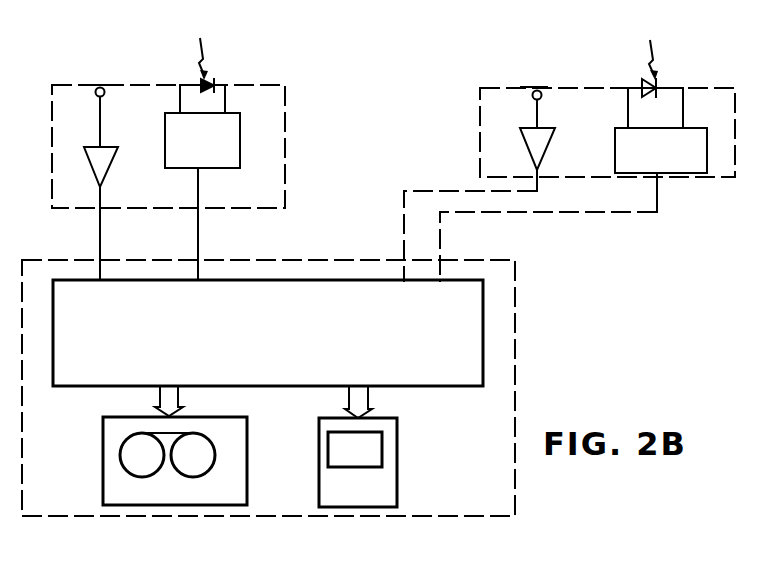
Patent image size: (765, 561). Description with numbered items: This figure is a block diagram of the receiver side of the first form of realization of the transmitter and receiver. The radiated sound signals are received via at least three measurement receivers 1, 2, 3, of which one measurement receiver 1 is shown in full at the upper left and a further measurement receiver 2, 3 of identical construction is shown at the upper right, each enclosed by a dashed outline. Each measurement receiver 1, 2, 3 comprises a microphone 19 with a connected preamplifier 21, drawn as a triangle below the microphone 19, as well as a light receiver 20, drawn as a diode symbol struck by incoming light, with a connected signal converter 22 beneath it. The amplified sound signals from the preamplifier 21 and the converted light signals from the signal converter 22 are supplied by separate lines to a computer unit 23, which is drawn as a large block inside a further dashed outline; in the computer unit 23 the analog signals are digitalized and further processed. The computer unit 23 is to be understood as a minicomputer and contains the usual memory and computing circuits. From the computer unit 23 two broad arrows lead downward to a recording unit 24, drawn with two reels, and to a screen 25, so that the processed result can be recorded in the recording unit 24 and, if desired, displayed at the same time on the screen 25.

The measurement receiver 1 is at (277, 89).
The measurement receiver 2 is at (607, 134).
The measurement receiver 3 is at (718, 170).
The microphone 19 is at (108, 79).
The light receiver 20 is at (214, 84).
The preamplifier 21 is at (96, 162).
The signal converter 22 is at (226, 150).
The computer unit 23 is at (268, 333).
The recording unit 24 is at (123, 490).
The screen 25 is at (364, 491).